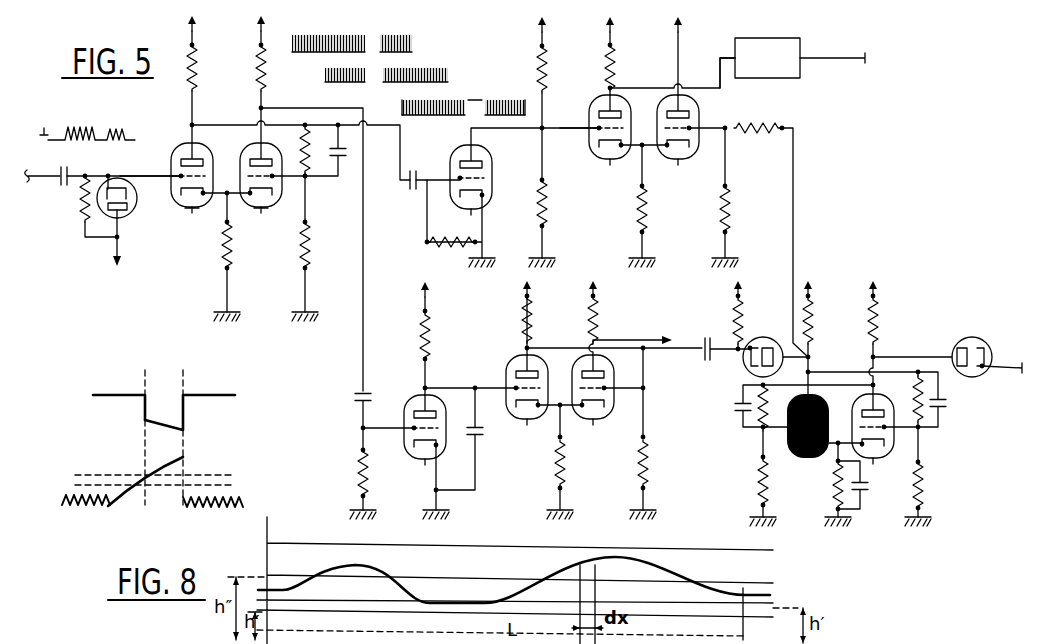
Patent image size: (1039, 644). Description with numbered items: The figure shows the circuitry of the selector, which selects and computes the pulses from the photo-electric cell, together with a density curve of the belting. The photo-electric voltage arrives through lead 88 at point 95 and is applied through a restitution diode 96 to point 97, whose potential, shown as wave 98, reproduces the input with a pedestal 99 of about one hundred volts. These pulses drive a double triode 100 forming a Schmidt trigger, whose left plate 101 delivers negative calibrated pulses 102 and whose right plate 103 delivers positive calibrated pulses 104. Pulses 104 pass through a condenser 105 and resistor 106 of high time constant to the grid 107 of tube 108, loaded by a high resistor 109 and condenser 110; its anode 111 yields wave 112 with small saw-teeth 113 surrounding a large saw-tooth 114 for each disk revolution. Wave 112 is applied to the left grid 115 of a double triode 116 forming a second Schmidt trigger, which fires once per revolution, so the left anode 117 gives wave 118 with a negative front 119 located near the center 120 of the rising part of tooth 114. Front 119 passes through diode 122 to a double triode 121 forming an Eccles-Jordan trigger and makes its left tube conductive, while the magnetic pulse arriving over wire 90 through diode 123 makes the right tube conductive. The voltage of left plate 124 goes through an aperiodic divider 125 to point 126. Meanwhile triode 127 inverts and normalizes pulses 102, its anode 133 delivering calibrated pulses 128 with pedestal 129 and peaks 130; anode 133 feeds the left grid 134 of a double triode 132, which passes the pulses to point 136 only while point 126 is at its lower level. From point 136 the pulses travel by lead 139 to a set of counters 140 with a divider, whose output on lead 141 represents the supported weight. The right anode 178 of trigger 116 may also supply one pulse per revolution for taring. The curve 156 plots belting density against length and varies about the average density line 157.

In FIG. 5, the lead 88 is at (40, 178).
In FIG. 5, the wire 90 is at (1000, 375).
In FIG. 5, the point 95 is at (83, 178).
In FIG. 5, the restitution diode 96 is at (137, 212).
In FIG. 5, the point 97 is at (148, 175).
In FIG. 5, the wave 98 is at (102, 127).
In FIG. 5, the pedestal 99 is at (42, 121).
In FIG. 5, the double triode 100 is at (228, 224).
In FIG. 5, the left plate 101 is at (174, 150).
In FIG. 5, the negative normalized pulses 102 is at (449, 78).
In FIG. 5, the right plate 103 is at (245, 151).
In FIG. 5, the positive normalized pulses 104 is at (412, 46).
In FIG. 5, the condenser 105 is at (354, 400).
In FIG. 5, the resistor 106 is at (356, 477).
In FIG. 5, the grid 107 is at (413, 429).
In FIG. 5, the tube 108 is at (431, 397).
In FIG. 5, the resistor 109 is at (421, 337).
In FIG. 5, the condenser 110 is at (484, 432).
In FIG. 5, the anode 111 is at (414, 405).
In FIG. 5, the wave 112 is at (177, 499).
In FIG. 5, the small saw-teeth 113 is at (68, 495).
In FIG. 5, the large saw-tooth 114 is at (184, 456).
In FIG. 5, the left grid 115 is at (513, 386).
In FIG. 5, the double triode 116 is at (522, 420).
In FIG. 5, the left anode 117 is at (516, 370).
In FIG. 5, the wave 118 is at (190, 401).
In FIG. 5, the negative front 119 is at (145, 415).
In FIG. 5, the center 120 is at (145, 473).
In FIG. 5, the double triode 121 is at (797, 458).
In FIG. 5, the diode 122 is at (745, 366).
In FIG. 5, the diode 123 is at (957, 344).
In FIG. 5, the left plate 124 is at (811, 397).
In FIG. 5, the aperiodic divider 125 is at (735, 205).
In FIG. 5, the point 126 is at (727, 131).
In FIG. 5, the triode 127 is at (492, 196).
In FIG. 5, the calibrated pulses 128 is at (504, 105).
In FIG. 5, the pedestal 129 is at (447, 115).
In FIG. 5, the peaks 130 is at (403, 104).
In FIG. 5, the double triode 132 is at (592, 152).
In FIG. 5, the anode 133 is at (490, 158).
In FIG. 5, the left grid 134 is at (598, 129).
In FIG. 5, the point 136 is at (605, 85).
In FIG. 5, the lead 139 is at (721, 88).
In FIG. 5, the set of counters 140 is at (786, 52).
In FIG. 5, the lead 141 is at (829, 60).
In FIG. 8, the curve 156 is at (675, 568).
In FIG. 8, the line 157 is at (771, 605).
In FIG. 5, the right anode 178 is at (598, 373).